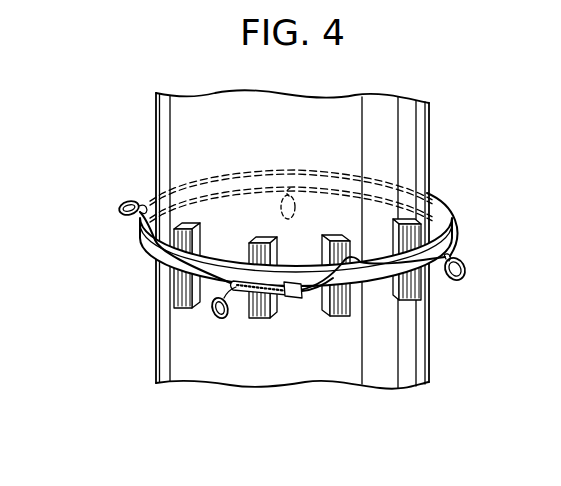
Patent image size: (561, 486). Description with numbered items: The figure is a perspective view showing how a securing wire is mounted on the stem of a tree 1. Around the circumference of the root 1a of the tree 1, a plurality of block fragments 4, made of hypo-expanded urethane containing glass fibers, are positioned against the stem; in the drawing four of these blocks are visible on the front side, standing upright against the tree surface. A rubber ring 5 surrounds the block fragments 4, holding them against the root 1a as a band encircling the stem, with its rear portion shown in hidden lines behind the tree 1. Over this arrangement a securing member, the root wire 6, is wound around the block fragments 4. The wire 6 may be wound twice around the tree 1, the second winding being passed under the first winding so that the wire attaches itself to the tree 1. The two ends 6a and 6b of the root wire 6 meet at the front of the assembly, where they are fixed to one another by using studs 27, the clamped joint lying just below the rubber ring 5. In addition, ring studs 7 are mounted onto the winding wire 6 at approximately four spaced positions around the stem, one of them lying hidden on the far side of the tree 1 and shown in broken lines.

The tree 1 is at (388, 119).
The root 1a is at (390, 167).
The block fragments 4 is at (413, 288).
The rubber ring 5 is at (142, 243).
The root wire 6 is at (452, 224).
The end of root wire 6a is at (310, 296).
The end of root wire 6b is at (237, 293).
The ring studs 7 is at (126, 201).
The studs 27 is at (291, 300).